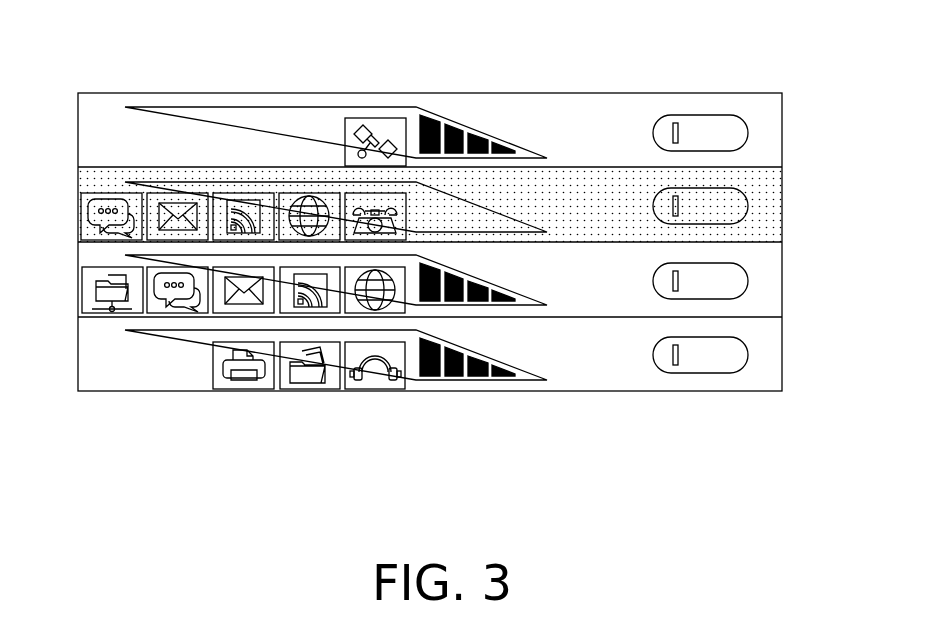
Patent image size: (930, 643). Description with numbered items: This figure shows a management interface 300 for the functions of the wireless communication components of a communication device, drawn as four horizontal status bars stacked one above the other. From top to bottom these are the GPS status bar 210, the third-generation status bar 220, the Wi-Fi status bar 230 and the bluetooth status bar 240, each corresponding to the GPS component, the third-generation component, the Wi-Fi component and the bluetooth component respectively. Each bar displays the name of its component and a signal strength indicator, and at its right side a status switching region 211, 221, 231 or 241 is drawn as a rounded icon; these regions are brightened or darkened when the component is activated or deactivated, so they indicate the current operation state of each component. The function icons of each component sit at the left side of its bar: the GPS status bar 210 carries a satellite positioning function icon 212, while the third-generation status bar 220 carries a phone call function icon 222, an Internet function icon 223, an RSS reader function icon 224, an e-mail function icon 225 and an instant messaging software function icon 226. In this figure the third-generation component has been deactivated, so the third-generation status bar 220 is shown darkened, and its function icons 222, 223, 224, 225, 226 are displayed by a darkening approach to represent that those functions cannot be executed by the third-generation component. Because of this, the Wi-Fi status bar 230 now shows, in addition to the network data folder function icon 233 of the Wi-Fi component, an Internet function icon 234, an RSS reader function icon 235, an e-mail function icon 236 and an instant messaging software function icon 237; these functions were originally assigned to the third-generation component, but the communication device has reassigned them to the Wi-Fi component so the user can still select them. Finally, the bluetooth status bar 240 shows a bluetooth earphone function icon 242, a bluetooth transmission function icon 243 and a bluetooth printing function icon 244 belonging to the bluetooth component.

The management interface 300 is at (686, 75).
The GPS status bar 210 is at (768, 138).
The status switching region 211 is at (720, 133).
The satellite positioning function icon 212 is at (392, 130).
The 3G status bar 220 is at (768, 223).
The status switching region 221 is at (728, 202).
The phone call function icon 222 is at (363, 203).
The Internet function icon 223 is at (300, 198).
The RSS reader function icon 224 is at (245, 205).
The e-mail function icon 225 is at (180, 205).
The instant messaging software function icon 226 is at (113, 200).
The Wi-Fi status bar 230 is at (772, 290).
The status switching region 231 is at (723, 285).
The network data folder function icon 233 is at (110, 290).
The Internet function icon 234 is at (385, 273).
The RSS reader function icon 235 is at (318, 280).
The e-mail function icon 236 is at (247, 285).
The instant messaging software function icon 237 is at (172, 297).
The bluetooth status bar 240 is at (772, 363).
The status switching region 241 is at (730, 355).
The bluetooth earphone function icon 242 is at (372, 373).
The bluetooth transmission function icon 243 is at (315, 378).
The bluetooth printing function icon 244 is at (248, 372).